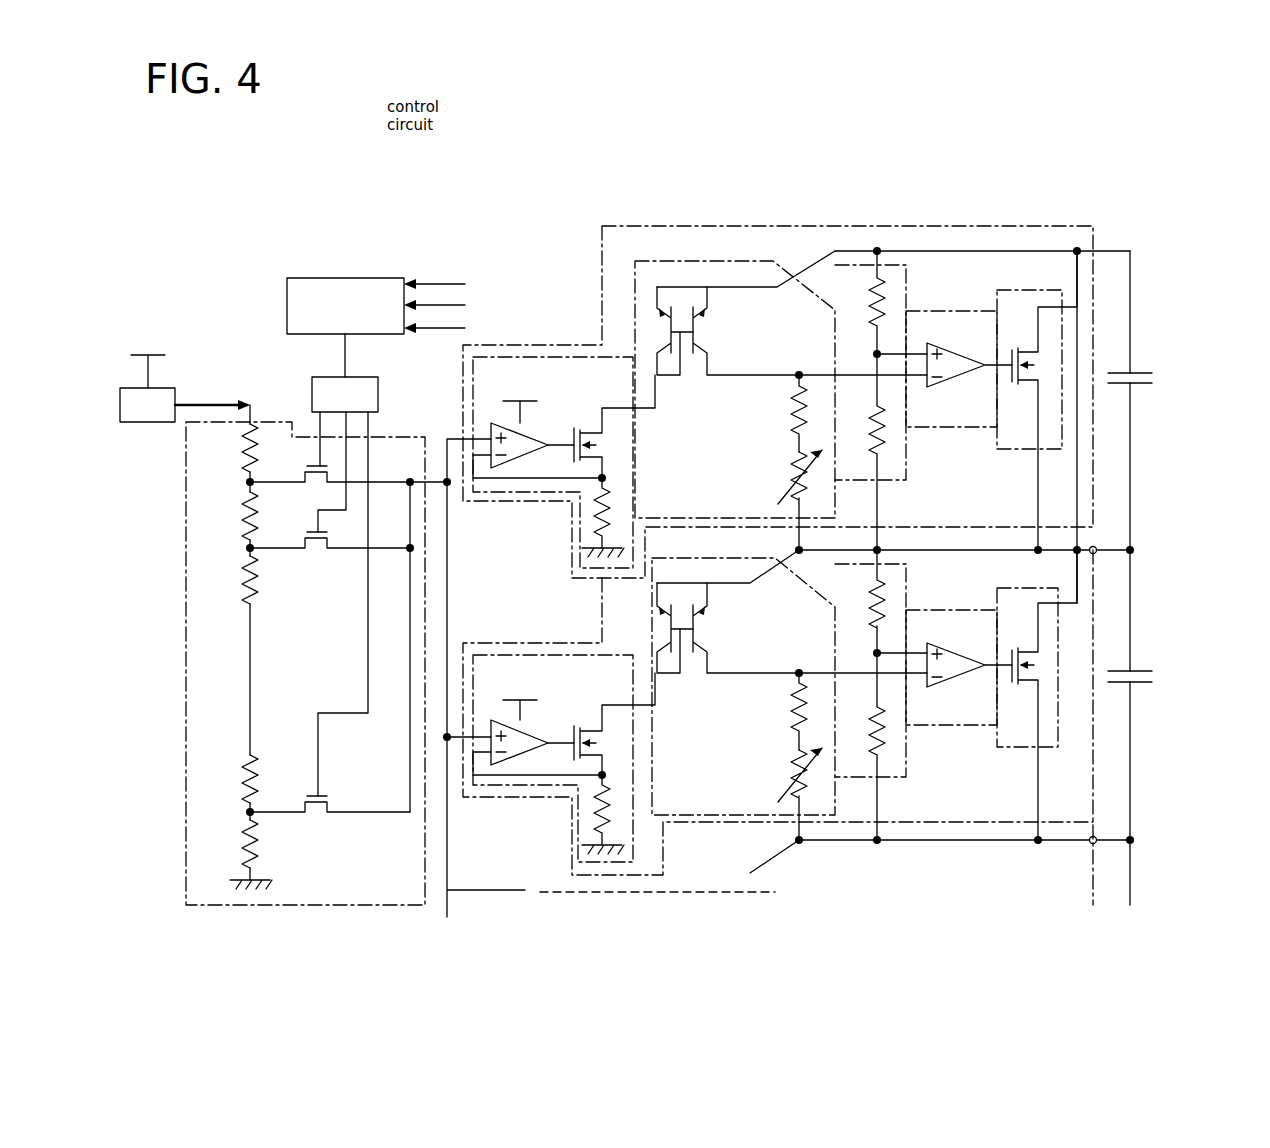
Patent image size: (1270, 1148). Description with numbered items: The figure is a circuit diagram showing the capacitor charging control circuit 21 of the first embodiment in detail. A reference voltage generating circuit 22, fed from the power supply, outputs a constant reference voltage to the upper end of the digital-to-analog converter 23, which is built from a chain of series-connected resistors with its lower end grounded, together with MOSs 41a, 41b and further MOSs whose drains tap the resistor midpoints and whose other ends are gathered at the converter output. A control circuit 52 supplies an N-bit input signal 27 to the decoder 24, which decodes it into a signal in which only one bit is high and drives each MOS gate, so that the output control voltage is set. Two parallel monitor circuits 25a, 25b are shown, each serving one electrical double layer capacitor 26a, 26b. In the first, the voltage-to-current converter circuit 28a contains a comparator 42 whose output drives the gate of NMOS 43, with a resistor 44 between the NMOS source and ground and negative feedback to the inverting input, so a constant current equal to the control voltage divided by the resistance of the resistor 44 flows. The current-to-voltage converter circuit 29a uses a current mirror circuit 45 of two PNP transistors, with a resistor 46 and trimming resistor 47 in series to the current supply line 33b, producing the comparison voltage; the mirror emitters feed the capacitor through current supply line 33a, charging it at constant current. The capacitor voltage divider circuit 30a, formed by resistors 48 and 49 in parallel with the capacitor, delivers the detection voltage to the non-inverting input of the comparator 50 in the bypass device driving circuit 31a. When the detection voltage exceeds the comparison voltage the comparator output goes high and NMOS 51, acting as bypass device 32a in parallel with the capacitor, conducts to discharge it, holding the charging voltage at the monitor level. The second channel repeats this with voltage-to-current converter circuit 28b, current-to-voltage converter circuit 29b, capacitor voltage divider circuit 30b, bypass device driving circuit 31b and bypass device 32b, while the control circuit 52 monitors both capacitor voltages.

The capacitor charging control circuit 21 is at (220, 283).
The reference voltage generating circuit 22 is at (143, 425).
The digital-to-analog converter 23 is at (289, 655).
The decoder 24 is at (378, 388).
The parallel monitor circuit 25a is at (617, 273).
The parallel monitor circuit 25b is at (538, 795).
The electrical double layer capacitor 26a is at (1148, 372).
The electrical double layer capacitor 26b is at (1148, 668).
The N-bit input signal 27 is at (343, 358).
The voltage-to-current converter circuit 28a is at (570, 463).
The voltage-to-current converter circuit 28b is at (549, 758).
The current-to-voltage converter circuit 29a is at (781, 400).
The current-to-voltage converter circuit 29b is at (789, 695).
The capacitor voltage divider circuit 30a is at (892, 400).
The capacitor voltage divider circuit 30b is at (890, 768).
The bypass device driving circuit 31a is at (944, 347).
The bypass device driving circuit 31b is at (944, 667).
The bypass device 32a is at (1037, 400).
The bypass device 32b is at (1037, 695).
The current supply line 33a is at (963, 248).
The current supply line 33b is at (982, 547).
The MOS 41a is at (310, 487).
The MOS 41b is at (312, 552).
The comparator 42 is at (517, 448).
The NMOS 43 is at (588, 432).
The resistor 44 is at (603, 518).
The current mirror circuit 45 is at (702, 338).
The resistor 46 is at (787, 407).
The trimming resistor 47 is at (790, 472).
The resistor 48 is at (862, 305).
The resistor 49 is at (887, 435).
The comparator 50 is at (962, 363).
The NMOS 51 is at (1025, 387).
The control circuit 52 is at (340, 282).